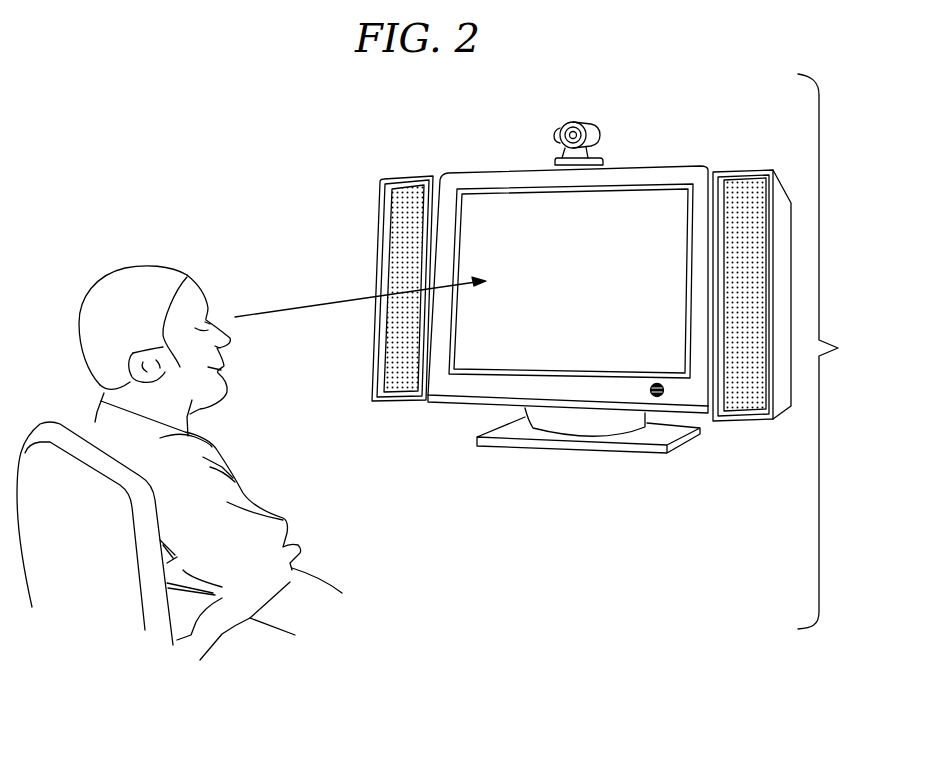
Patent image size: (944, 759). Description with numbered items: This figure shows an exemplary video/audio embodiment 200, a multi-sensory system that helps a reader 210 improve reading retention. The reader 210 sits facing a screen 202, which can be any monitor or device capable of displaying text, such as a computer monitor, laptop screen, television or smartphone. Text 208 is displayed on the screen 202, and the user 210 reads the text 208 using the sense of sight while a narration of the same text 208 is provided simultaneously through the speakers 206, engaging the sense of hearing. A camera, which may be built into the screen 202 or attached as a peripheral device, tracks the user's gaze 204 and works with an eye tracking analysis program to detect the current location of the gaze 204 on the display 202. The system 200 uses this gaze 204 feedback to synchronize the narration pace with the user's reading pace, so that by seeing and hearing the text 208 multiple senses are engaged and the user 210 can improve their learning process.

The video/audio embodiment 200 is at (601, 351).
The screen 202 is at (673, 165).
The user's gaze 204 is at (478, 265).
The speakers 206 is at (415, 196).
The text 208 is at (578, 338).
The reader 210 is at (115, 270).